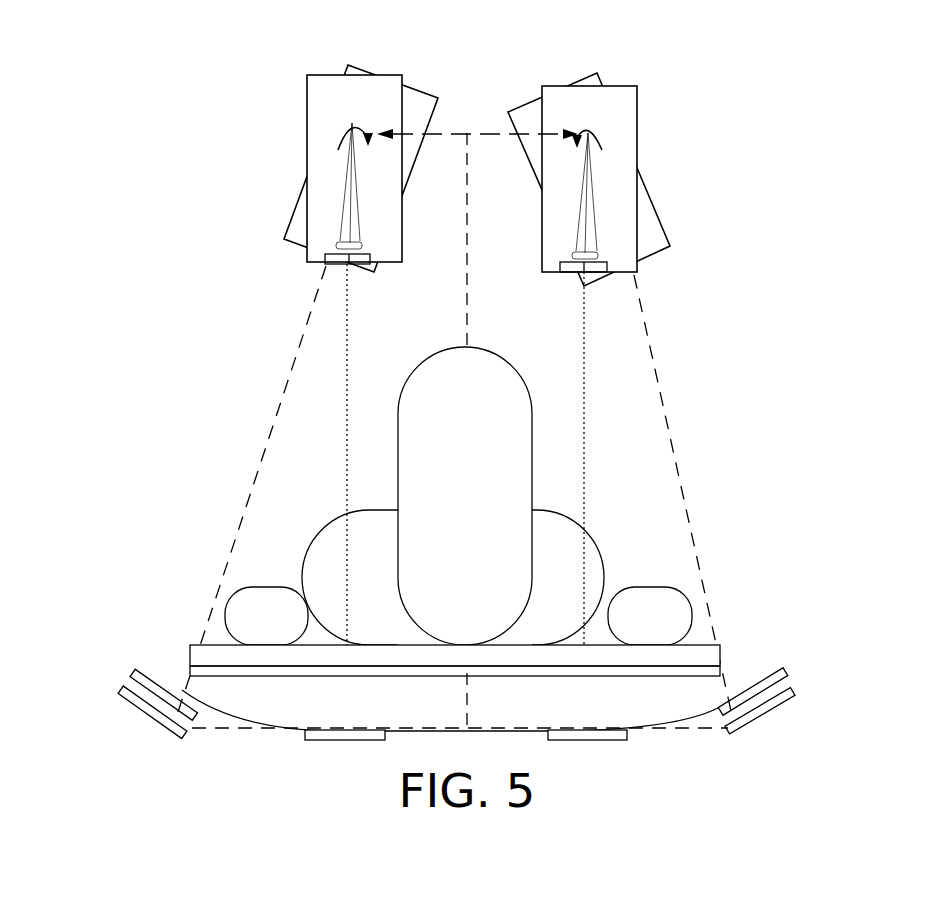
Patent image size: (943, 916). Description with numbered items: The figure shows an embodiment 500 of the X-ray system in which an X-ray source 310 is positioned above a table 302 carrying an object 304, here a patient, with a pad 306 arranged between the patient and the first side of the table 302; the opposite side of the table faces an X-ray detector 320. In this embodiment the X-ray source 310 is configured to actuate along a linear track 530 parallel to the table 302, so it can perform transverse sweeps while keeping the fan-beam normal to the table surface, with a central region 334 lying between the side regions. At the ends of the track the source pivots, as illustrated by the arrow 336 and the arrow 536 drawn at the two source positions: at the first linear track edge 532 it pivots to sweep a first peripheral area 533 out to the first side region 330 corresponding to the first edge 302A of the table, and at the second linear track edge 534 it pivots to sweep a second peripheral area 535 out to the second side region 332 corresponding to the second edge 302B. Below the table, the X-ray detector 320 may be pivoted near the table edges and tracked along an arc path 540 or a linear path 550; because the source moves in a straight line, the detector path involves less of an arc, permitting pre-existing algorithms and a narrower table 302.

The embodiment of the X-ray system 500 is at (740, 36).
The X-ray source 310 is at (360, 69).
The rotation direction of left sensor 536 is at (340, 135).
The arrow 336 is at (607, 154).
The linear track 530 is at (467, 133).
The central region 334 is at (467, 272).
The second linear track edge 534 is at (348, 337).
The first linear track edge 532 is at (584, 337).
The second side region 332 is at (276, 420).
The first side region 330 is at (676, 458).
The second peripheral area 535 is at (292, 452).
The first peripheral area 533 is at (618, 522).
The object 304 is at (328, 527).
The pad 306 is at (192, 645).
The table 302 is at (387, 676).
The second edge 302B is at (190, 668).
The first edge 302A is at (722, 669).
The X-ray detector 320 is at (118, 689).
The arc path 540 is at (225, 718).
The linear path 550 is at (243, 730).